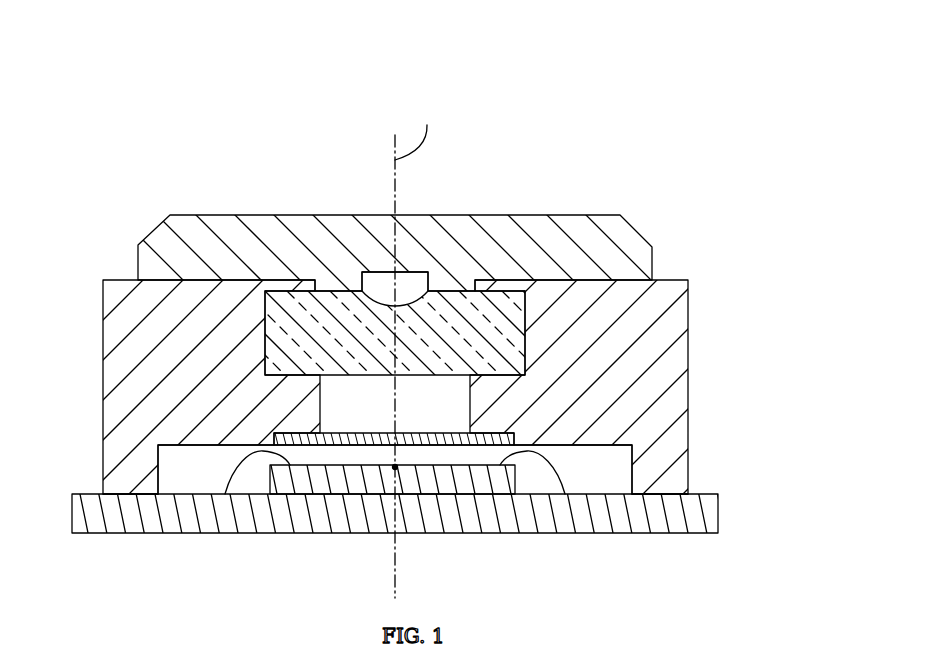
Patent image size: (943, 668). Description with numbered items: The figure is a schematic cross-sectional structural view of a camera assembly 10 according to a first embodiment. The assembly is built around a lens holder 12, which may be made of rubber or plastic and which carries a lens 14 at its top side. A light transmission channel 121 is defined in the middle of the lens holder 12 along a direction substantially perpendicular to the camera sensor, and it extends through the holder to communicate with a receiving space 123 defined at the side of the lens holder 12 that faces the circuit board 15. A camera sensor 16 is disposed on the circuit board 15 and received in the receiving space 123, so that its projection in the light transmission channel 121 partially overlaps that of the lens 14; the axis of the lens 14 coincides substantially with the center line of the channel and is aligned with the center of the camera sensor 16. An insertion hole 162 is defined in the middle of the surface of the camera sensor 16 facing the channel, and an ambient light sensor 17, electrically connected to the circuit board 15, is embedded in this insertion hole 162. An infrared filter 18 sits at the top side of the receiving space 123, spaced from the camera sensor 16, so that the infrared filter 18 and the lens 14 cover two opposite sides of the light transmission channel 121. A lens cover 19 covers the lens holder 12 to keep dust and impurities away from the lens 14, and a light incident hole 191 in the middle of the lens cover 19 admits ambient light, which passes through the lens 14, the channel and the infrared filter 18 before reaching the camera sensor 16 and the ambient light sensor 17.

The camera assembly 10 is at (352, 62).
The lens holder 12 is at (660, 372).
The light transmission channel 121 is at (455, 492).
The receiving space 123 is at (197, 478).
The lens 14 is at (330, 305).
The circuit board 15 is at (633, 518).
The camera sensor 16 is at (292, 487).
The insertion hole 162 is at (395, 467).
The ambient light sensor 17 is at (395, 467).
The infrared filter 18 is at (513, 436).
The lens cover 19 is at (532, 227).
The light incident hole 191 is at (422, 238).